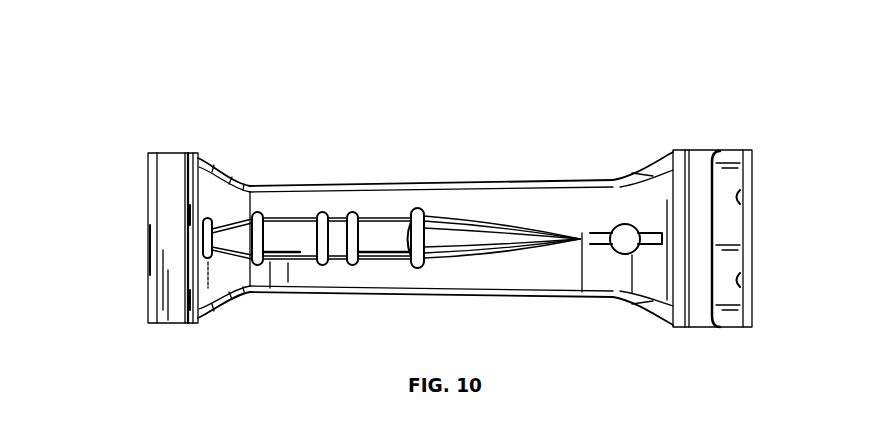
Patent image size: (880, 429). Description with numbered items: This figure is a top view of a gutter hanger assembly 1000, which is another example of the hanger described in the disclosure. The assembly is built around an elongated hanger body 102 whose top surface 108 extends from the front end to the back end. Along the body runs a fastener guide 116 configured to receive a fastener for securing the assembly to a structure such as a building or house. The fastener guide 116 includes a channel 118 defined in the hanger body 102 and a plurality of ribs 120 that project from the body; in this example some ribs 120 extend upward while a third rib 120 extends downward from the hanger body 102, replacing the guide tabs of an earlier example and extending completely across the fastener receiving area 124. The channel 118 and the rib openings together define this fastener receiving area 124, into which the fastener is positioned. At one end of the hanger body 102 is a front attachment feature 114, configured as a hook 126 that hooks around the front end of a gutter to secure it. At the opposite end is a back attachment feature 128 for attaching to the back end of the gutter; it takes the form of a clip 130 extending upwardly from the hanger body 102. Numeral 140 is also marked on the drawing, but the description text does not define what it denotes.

The gutter hanger assembly 1000 is at (642, 50).
The end cap 140 is at (157, 152).
The back attachment feature 128 is at (178, 157).
The clip 130 is at (199, 160).
The fastener guide 116 is at (277, 160).
The hanger body 102 is at (433, 187).
The top surface 108 is at (528, 200).
The fastener receiving area 124 is at (440, 232).
The rib 120 is at (272, 245).
The channel 118 is at (457, 245).
The front attachment feature 114 is at (737, 160).
The hook 126 is at (738, 226).